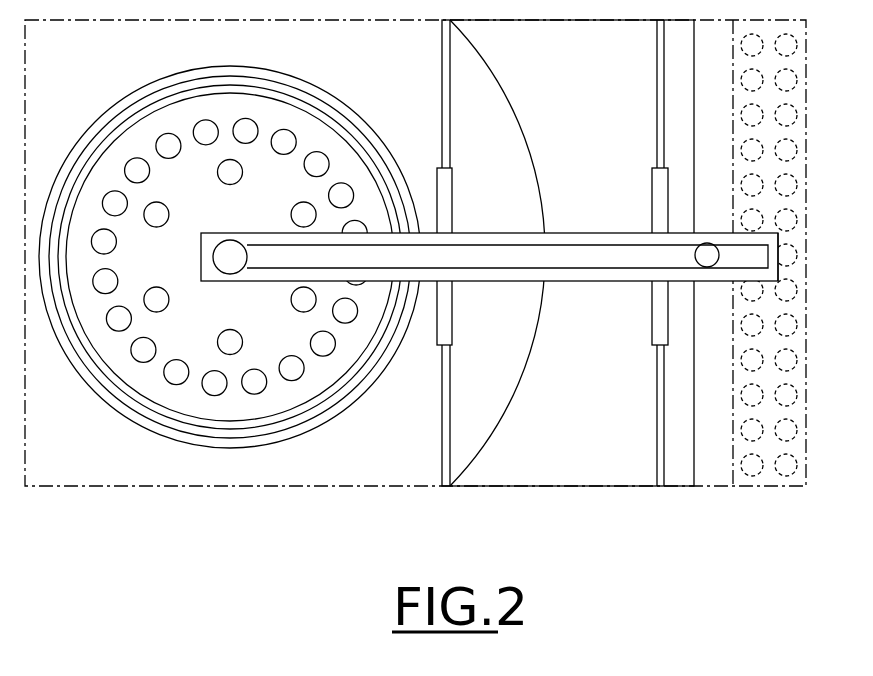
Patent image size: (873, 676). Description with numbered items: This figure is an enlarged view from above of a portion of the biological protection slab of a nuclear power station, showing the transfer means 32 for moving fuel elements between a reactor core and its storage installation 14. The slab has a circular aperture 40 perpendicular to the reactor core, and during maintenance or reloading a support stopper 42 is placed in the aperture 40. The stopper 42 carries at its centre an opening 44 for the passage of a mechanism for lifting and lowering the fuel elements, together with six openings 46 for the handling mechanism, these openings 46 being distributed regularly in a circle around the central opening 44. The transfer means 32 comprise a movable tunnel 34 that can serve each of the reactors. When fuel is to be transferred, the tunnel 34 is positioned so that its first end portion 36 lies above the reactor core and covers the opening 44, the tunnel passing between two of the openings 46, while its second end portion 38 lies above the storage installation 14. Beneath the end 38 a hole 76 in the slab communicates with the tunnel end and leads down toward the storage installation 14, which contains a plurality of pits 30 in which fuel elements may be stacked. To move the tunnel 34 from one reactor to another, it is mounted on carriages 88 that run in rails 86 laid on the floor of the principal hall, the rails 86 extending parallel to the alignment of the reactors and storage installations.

The storage installation 14 is at (815, 377).
The pits 30 is at (788, 399).
The transfer means 32 is at (792, 270).
The movable tunnel 34 is at (588, 238).
The first end portion 36 is at (272, 233).
The second end portion 38 is at (760, 237).
The circular aperture 40 is at (206, 437).
The support stopper 42 is at (350, 168).
The central opening 44 is at (231, 252).
The openings 46 is at (233, 177).
The hole 76 is at (707, 265).
The rails 86 is at (449, 140).
The carriages 88 is at (451, 200).